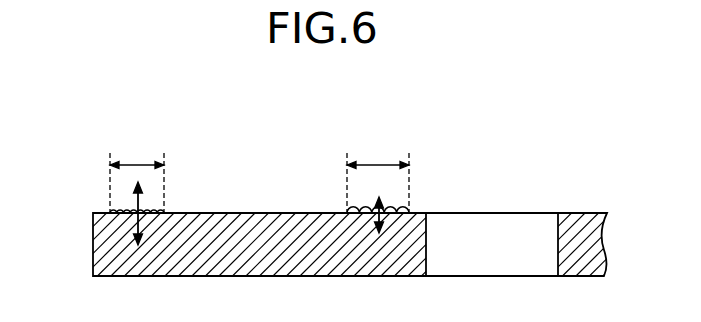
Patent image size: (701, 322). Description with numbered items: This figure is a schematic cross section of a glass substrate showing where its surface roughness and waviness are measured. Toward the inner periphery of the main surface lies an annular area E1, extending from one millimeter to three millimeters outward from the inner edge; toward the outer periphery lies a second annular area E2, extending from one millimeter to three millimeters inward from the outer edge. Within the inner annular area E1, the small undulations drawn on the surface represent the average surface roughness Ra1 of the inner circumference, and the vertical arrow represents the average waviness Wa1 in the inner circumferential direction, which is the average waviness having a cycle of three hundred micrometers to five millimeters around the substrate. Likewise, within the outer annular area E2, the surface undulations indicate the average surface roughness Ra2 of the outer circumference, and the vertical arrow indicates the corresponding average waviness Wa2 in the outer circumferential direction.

The annular area E2 is at (137, 172).
The average surface roughness of the outer circumference Ra2 is at (175, 186).
The average waviness in the outer circumferential direction Wa2 is at (82, 213).
The annular area E1 is at (378, 172).
The average surface roughness of the inner circumference Ra1 is at (342, 185).
The average waviness in the inner circumferential direction Wa1 is at (433, 207).